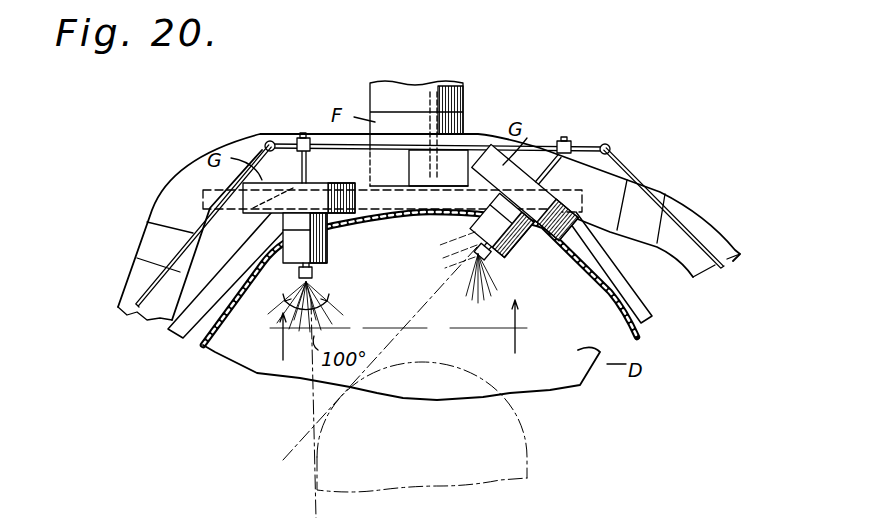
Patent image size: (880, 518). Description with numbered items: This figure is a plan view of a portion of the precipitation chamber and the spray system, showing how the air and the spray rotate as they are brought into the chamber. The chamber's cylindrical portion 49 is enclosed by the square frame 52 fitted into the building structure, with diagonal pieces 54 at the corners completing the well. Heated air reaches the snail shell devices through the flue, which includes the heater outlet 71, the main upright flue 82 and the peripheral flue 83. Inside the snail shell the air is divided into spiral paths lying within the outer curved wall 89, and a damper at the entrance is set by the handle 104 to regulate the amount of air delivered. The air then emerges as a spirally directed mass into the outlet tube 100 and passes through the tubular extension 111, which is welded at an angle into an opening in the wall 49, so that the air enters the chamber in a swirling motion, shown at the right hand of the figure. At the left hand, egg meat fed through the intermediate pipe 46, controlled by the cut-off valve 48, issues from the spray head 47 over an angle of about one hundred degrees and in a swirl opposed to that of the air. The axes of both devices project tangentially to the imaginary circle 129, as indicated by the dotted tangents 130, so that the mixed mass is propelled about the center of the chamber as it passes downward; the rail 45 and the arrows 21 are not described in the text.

The spray direction arrow 21 is at (392, 338).
The rail 45 is at (443, 142).
The intermediate pipe 46 is at (300, 167).
The spray head 47 is at (314, 274).
The cut-off valve 48 is at (303, 133).
The cylindrical portion 49 is at (213, 333).
The square frame 52 is at (427, 197).
The diagonal piece 54 is at (180, 333).
The heater outlet 71 is at (456, 90).
The main upright flue 82 is at (445, 110).
The peripheral flue 83 is at (168, 192).
The outer curved wall 89 is at (316, 205).
The outlet tube 100 is at (287, 227).
The handle 104 is at (475, 145).
The tubular extension 111 is at (298, 276).
The imaginary circle 129 is at (422, 427).
The dotted tangent 130 is at (312, 401).